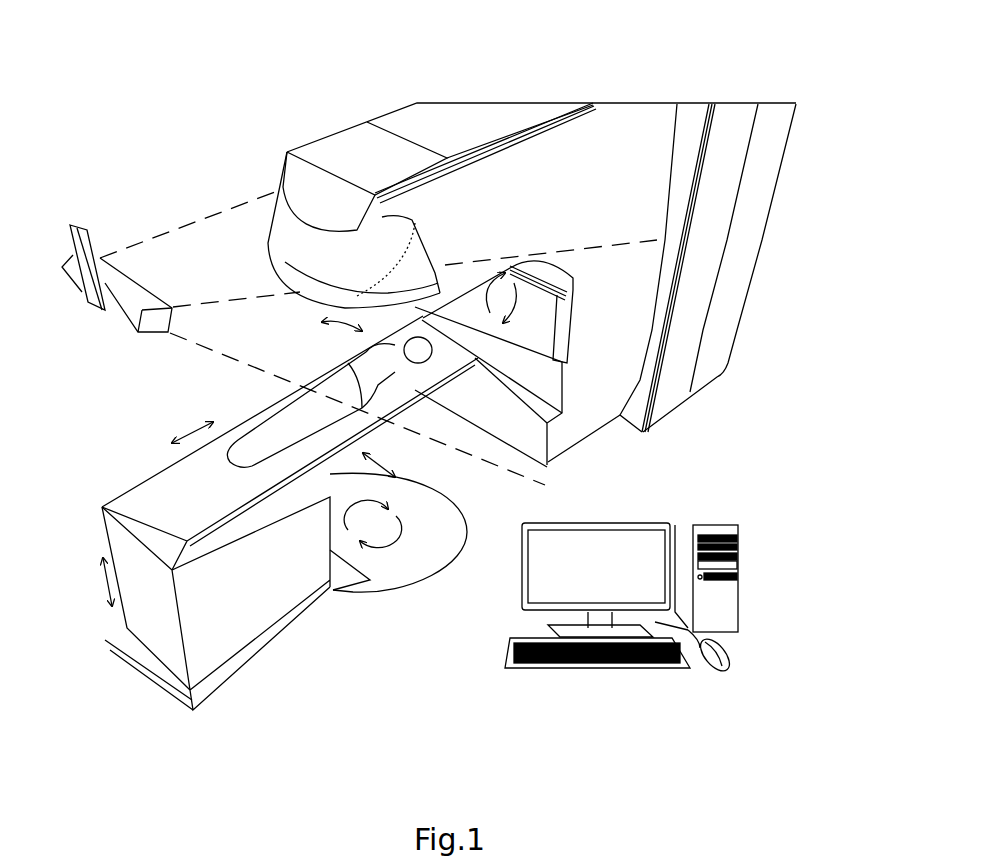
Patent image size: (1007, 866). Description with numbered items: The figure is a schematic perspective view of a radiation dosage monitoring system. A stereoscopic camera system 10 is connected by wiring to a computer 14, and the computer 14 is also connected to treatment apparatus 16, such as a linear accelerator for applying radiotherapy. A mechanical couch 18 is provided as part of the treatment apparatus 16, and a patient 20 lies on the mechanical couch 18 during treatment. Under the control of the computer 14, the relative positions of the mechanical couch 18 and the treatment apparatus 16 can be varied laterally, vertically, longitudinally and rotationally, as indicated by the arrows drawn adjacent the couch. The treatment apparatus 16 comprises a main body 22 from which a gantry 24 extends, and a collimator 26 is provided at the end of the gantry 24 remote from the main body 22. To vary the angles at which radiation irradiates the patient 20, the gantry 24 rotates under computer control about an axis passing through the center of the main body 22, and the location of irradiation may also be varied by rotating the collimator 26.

The stereoscopic camera system 10 is at (83, 217).
The computer 14 is at (640, 521).
The treatment apparatus 16 is at (478, 125).
The mechanical couch 18 is at (173, 653).
The patient 20 is at (355, 358).
The main body 22 is at (748, 293).
The gantry 24 is at (550, 195).
The collimator 26 is at (432, 217).